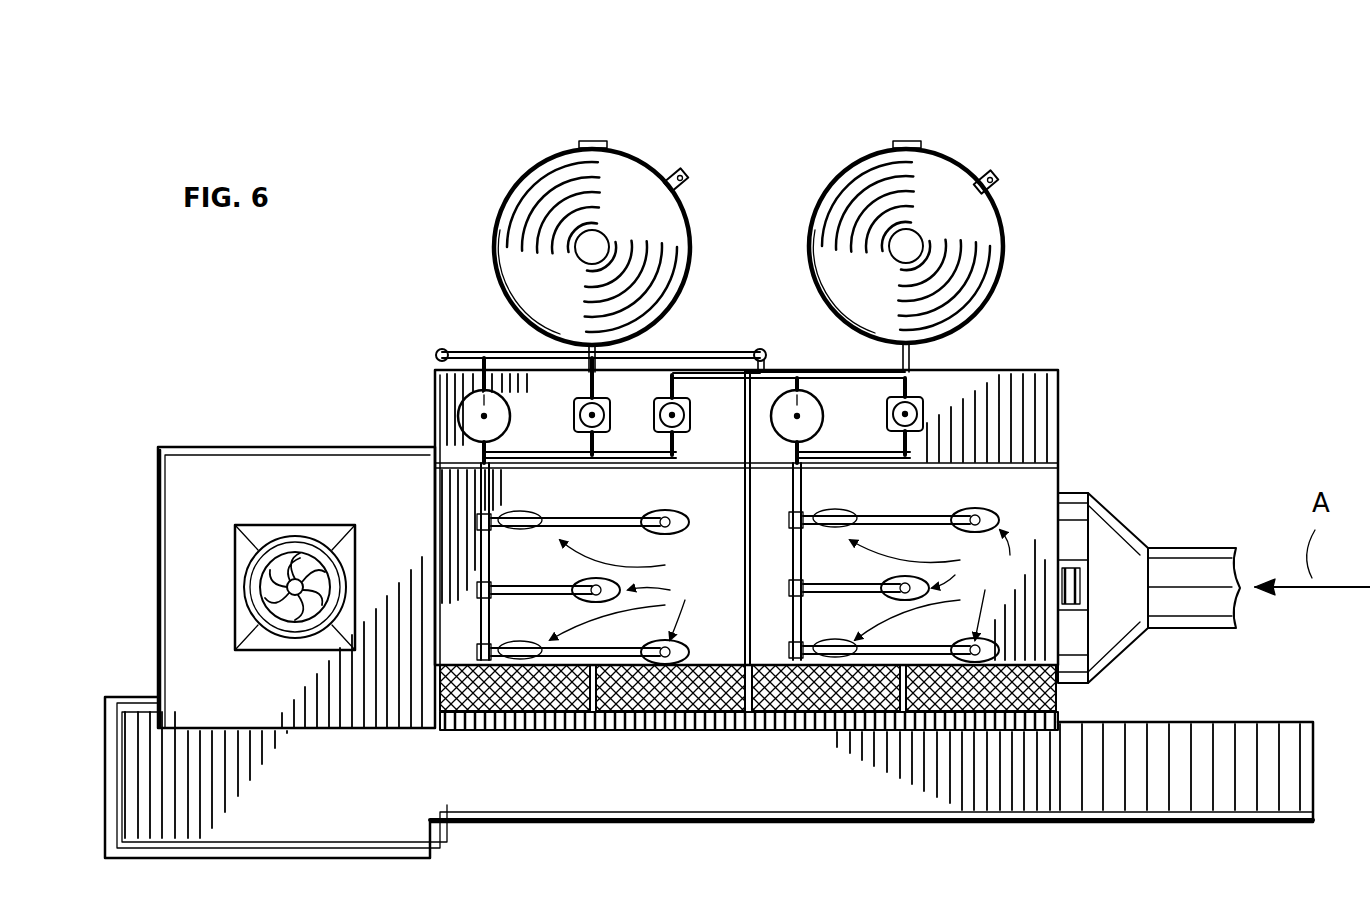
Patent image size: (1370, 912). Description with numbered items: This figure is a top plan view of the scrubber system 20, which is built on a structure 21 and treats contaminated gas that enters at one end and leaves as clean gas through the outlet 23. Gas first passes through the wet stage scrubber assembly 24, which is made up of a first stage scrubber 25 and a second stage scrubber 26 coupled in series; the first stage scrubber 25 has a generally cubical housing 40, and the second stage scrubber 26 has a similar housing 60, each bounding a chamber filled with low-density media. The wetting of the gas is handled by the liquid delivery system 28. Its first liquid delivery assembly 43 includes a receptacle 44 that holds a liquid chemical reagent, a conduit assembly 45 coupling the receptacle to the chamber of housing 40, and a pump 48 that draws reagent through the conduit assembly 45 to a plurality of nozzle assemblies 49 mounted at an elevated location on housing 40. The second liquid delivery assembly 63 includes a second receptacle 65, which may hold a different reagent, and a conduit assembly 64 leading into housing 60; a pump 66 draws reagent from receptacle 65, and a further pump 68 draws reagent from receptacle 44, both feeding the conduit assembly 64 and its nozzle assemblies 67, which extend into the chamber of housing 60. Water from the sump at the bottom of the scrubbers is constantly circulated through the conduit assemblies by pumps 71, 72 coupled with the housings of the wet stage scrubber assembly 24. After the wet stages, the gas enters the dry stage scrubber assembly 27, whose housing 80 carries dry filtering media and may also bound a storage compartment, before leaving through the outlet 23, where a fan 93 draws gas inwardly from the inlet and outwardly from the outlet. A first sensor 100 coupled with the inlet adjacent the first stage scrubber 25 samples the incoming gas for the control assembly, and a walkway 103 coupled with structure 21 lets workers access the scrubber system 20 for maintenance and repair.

The scrubber system 20 is at (700, 105).
The structure 21 is at (256, 528).
The outlet 23 is at (241, 583).
The wet stage scrubber assembly 24 is at (750, 348).
The first stage scrubber 25 is at (1062, 685).
The second stage scrubber 26 is at (625, 677).
The dry stage scrubber assembly 27 is at (312, 488).
The liquid delivery system 28 is at (672, 165).
The housing 40 is at (1141, 549).
The first liquid delivery assembly 43 is at (943, 242).
The receptacle 44 is at (962, 290).
The conduit assembly 45 is at (925, 510).
The pump 48 is at (928, 405).
The nozzle assemblies 49 is at (975, 495).
The housing 60 is at (435, 405).
The second liquid delivery assembly 63 is at (618, 208).
The conduit assembly 64 is at (625, 468).
The receptacle 65 is at (510, 210).
The pump 66 is at (600, 428).
The nozzle assemblies 67 is at (595, 563).
The pump 68 is at (720, 458).
The pump 71 is at (483, 392).
The pump 72 is at (797, 392).
The housing 80 is at (158, 505).
The fan 93 is at (290, 590).
The first sensor 100 is at (1110, 560).
The walkway 103 is at (478, 780).